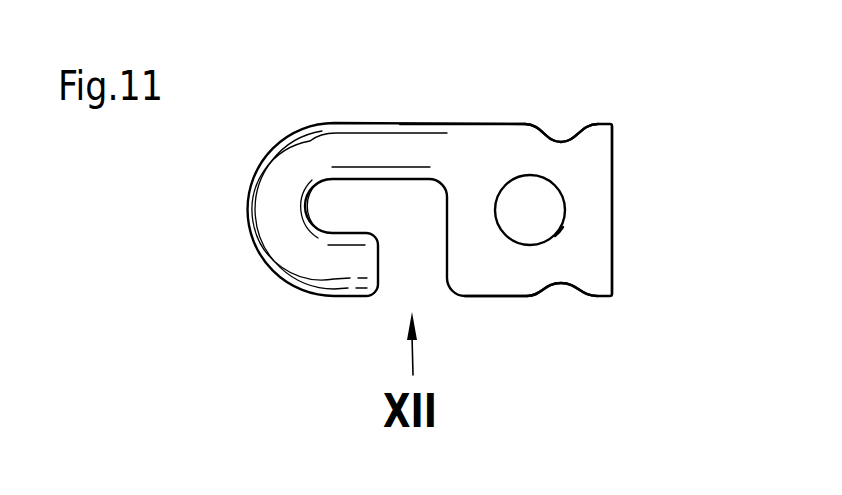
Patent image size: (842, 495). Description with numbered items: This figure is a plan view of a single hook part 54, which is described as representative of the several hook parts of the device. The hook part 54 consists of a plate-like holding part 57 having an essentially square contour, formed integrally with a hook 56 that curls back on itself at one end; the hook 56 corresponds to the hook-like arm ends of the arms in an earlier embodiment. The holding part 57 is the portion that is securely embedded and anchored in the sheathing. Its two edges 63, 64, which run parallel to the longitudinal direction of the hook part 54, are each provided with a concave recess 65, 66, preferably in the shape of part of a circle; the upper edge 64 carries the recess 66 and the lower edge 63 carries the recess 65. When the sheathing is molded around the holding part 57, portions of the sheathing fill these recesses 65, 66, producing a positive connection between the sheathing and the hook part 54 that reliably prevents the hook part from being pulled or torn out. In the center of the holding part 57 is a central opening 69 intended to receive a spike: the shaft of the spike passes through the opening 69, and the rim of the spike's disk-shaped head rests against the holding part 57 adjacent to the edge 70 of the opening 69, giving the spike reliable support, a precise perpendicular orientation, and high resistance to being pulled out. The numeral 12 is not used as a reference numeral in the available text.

The hook 12 is at (329, 123).
The hook part 54 is at (285, 267).
The hook 56 is at (270, 171).
The holding part 57 is at (592, 143).
The edge 63 is at (492, 297).
The edge 64 is at (453, 123).
The concave recess 65 is at (557, 292).
The concave recess 66 is at (558, 128).
The central opening 69 is at (545, 195).
The edge of the opening 70 is at (563, 227).